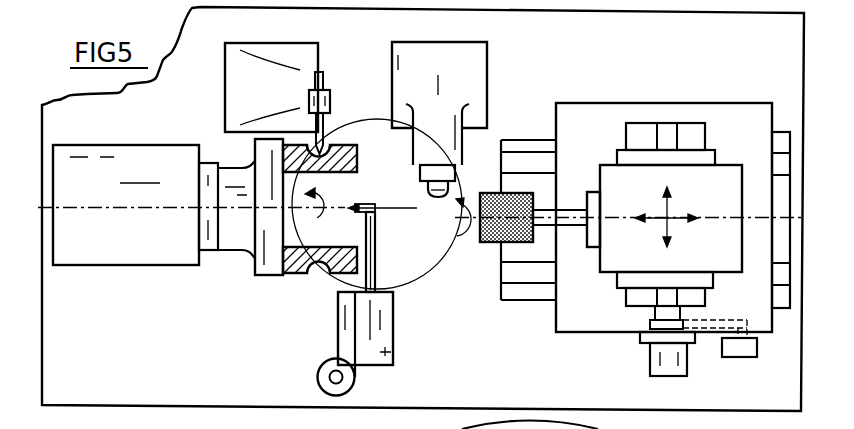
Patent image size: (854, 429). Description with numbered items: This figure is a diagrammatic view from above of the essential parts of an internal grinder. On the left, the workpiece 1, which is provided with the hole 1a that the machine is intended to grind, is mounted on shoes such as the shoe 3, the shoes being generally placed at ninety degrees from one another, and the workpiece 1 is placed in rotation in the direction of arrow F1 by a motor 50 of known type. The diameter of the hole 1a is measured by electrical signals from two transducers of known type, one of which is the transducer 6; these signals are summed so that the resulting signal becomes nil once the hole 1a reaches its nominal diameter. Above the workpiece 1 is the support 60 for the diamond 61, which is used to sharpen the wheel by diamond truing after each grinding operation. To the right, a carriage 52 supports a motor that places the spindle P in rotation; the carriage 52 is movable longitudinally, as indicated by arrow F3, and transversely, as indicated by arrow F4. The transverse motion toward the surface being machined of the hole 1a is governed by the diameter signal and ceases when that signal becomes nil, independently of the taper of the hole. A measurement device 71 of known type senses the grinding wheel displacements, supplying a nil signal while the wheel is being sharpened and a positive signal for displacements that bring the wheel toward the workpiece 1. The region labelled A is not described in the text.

The workpiece 1 is at (293, 262).
The hole 1a is at (346, 189).
The shoe 3 is at (325, 136).
The transducer 6 is at (386, 351).
The motor 50 is at (124, 266).
The carriage 52 is at (740, 106).
The support 60 is at (482, 68).
The diamond 61 is at (436, 199).
The measurement device 71 is at (740, 358).
The grinding zone A is at (373, 120).
The spindle P is at (563, 224).
The arrow F1 is at (323, 217).
The arrow F3 is at (671, 232).
The arrow F4 is at (679, 217).